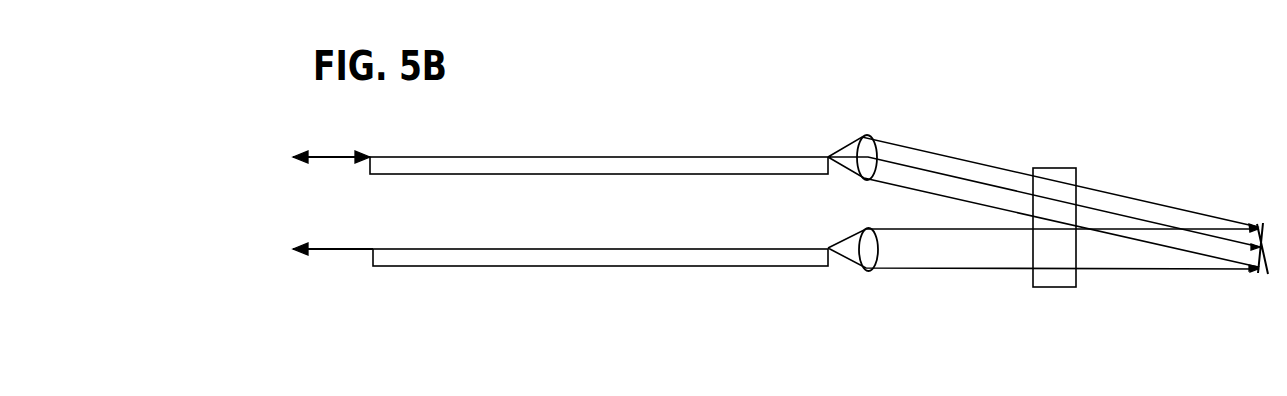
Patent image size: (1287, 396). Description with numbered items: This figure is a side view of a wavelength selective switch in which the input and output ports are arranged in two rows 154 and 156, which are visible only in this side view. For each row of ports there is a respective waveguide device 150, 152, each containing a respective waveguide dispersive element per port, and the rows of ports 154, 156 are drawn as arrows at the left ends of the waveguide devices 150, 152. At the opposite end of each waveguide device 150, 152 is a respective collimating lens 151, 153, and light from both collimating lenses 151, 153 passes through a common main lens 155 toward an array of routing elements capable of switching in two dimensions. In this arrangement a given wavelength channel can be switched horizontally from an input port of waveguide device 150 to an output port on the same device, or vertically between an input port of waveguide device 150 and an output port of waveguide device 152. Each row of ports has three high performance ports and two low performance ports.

The waveguide device 150 is at (602, 157).
The collimating lens 151 is at (867, 136).
The waveguide device 152 is at (602, 249).
The collimating lens 153 is at (867, 229).
The row of ports 154 is at (343, 157).
The main lens 155 is at (1064, 168).
The row of ports 156 is at (343, 249).